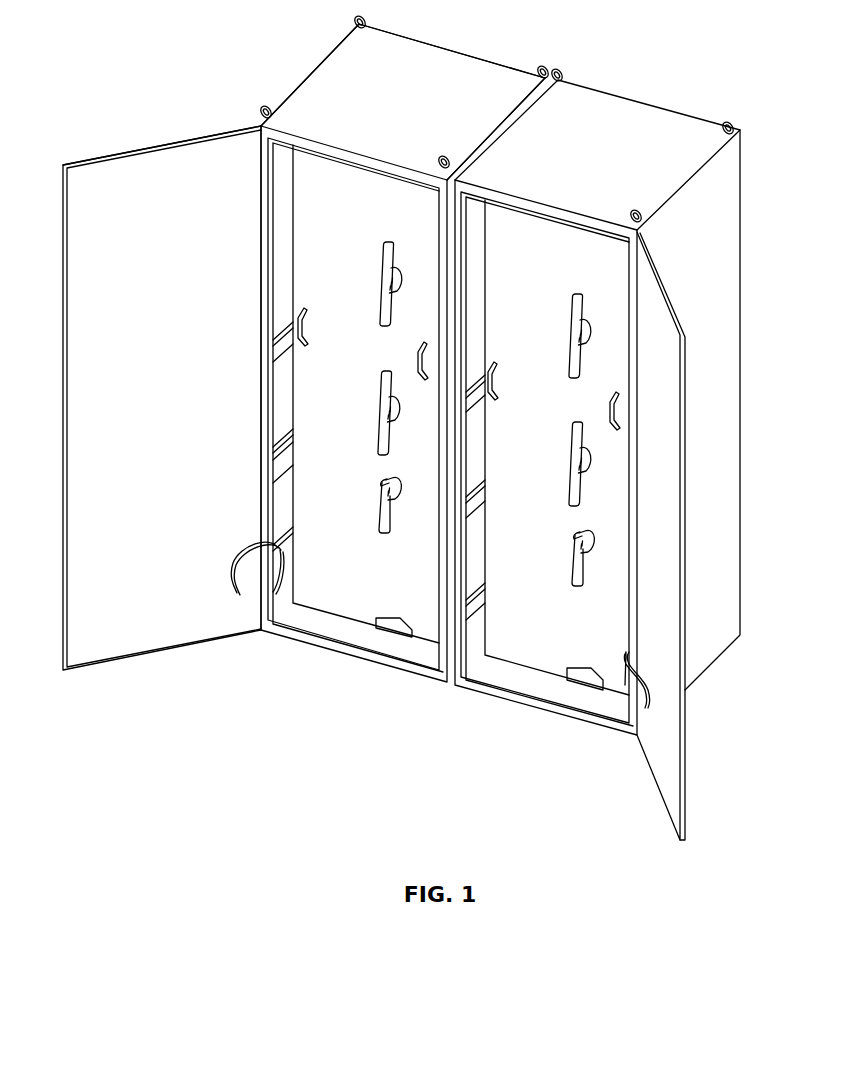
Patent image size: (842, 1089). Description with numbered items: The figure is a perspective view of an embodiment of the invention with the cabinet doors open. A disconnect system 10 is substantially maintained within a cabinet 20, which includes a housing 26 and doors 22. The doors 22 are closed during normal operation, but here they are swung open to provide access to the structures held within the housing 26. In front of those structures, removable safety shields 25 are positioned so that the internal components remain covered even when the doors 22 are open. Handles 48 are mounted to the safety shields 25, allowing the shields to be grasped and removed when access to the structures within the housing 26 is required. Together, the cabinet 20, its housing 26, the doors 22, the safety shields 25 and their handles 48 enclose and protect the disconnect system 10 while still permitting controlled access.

The disconnect system 10 is at (200, 96).
The cabinet 20 is at (600, 108).
The doors 22 is at (165, 390).
The removable safety shields 25 is at (333, 257).
The housing 26 is at (372, 117).
The handles 48 is at (576, 578).